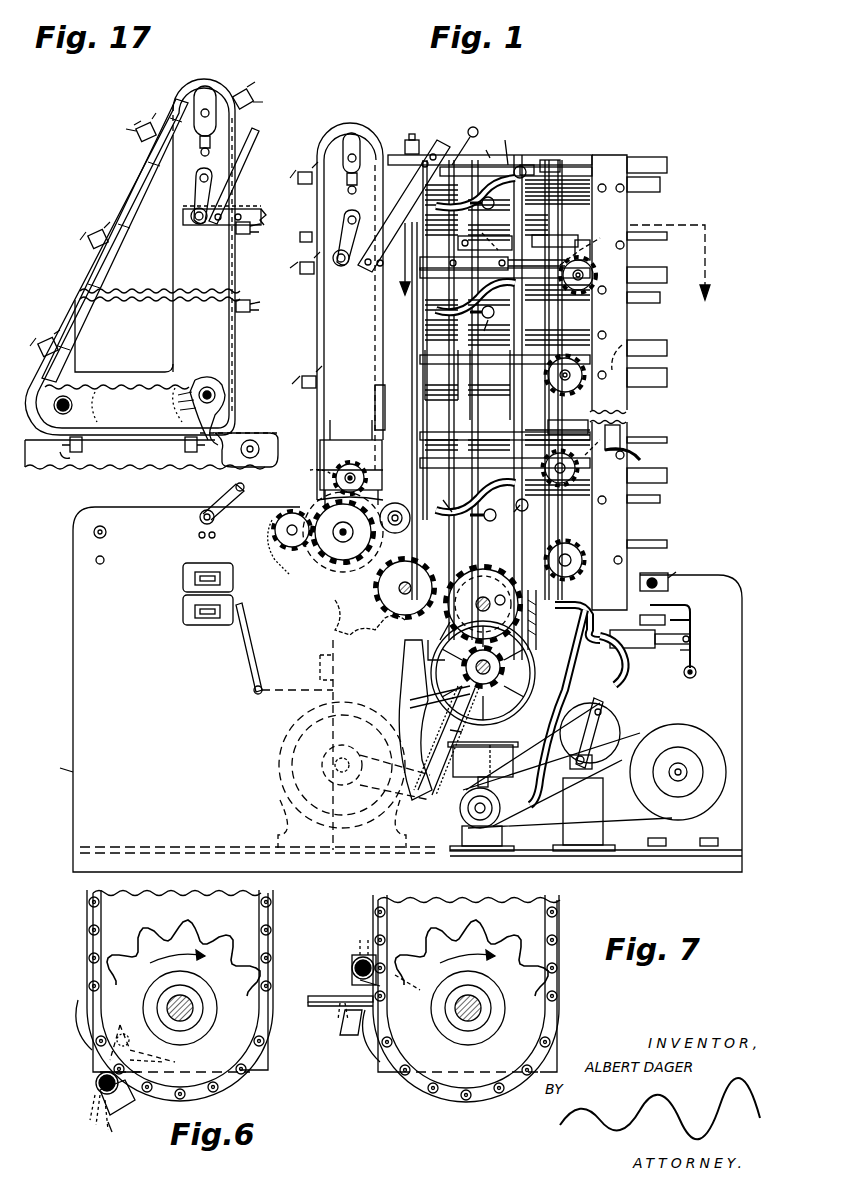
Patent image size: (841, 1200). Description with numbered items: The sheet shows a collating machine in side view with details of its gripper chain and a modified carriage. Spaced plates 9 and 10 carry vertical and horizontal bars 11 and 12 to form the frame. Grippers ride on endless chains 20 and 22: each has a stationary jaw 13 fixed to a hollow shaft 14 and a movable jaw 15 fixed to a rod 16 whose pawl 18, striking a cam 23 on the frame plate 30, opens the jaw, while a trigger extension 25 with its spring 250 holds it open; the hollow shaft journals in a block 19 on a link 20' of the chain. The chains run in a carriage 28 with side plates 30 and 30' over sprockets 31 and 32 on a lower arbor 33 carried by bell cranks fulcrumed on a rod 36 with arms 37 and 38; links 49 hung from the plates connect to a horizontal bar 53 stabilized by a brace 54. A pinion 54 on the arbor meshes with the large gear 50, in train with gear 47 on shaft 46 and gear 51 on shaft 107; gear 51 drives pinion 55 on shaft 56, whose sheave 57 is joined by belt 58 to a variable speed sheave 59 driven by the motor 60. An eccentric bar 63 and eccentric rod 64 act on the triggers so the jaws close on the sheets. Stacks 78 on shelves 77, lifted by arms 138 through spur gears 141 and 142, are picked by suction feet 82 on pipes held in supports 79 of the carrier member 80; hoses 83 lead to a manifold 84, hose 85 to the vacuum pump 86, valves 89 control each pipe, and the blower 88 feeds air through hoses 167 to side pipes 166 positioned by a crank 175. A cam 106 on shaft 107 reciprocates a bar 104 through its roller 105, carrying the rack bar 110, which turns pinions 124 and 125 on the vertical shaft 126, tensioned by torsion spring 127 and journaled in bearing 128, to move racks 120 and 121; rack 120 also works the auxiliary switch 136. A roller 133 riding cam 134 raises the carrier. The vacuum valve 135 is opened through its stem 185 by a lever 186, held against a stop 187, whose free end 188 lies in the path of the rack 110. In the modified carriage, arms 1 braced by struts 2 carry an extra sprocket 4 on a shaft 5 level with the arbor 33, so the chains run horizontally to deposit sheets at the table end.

In FIG. 17, the arm 1 is at (143, 380).
In FIG. 17, the reinforce brace 2 is at (135, 192).
In FIG. 17, the additional sprocket 4 is at (98, 408).
In FIG. 17, the shaft 5 is at (56, 406).
In FIG. 1, the side plate 9 is at (378, 501).
In FIG. 17, the side plate 10 is at (50, 470).
In FIG. 1, the side plate 10 is at (742, 716).
In FIG. 1, the vertical bar 11 is at (608, 158).
In FIG. 1, the horizontal bar 12 is at (667, 168).
In FIG. 17, the stationary jaw 13 is at (91, 240).
In FIG. 1, the stationary jaw 13 is at (305, 226).
In FIG. 6, the hollow shaft 14 is at (100, 1078).
In FIG. 7, the hollow shaft 14 is at (352, 963).
In FIG. 17, the movable jaw 15 is at (103, 230).
In FIG. 1, the movable jaw 15 is at (309, 212).
In FIG. 6, the movable jaw 15 is at (90, 1112).
In FIG. 6, the rod 16 is at (97, 1085).
In FIG. 7, the rod 16 is at (355, 973).
In FIG. 6, the pawl 18 is at (166, 1061).
In FIG. 7, the pawl 18 is at (352, 1028).
In FIG. 6, the block 19 is at (130, 1105).
In FIG. 7, the block 19 is at (384, 985).
In FIG. 1, the endless chain 20 is at (368, 397).
In FIG. 6, the endless chain 20 is at (167, 995).
In FIG. 7, the endless chain 20 is at (484, 998).
In FIG. 6, the link 20' is at (142, 1031).
In FIG. 7, the link 20' is at (422, 978).
In FIG. 17, the companion chain 22 is at (128, 446).
In FIG. 6, the cam 23 is at (80, 1003).
In FIG. 7, the cam 23 is at (378, 1045).
In FIG. 7, the extension 25 is at (318, 1003).
In FIG. 1, the carriage 28 is at (315, 306).
In FIG. 6, the frame plate 30 is at (196, 982).
In FIG. 7, the frame plate 30 is at (462, 997).
In FIG. 17, the side member 30' is at (160, 238).
In FIG. 1, the side member 30' is at (337, 407).
In FIG. 17, the sprocket 31 is at (175, 406).
In FIG. 6, the sprocket 31 is at (172, 925).
In FIG. 7, the sprocket 31 is at (518, 938).
In FIG. 1, the sprocket 32 is at (340, 445).
In FIG. 17, the lower arbor 33 is at (210, 394).
In FIG. 1, the lower arbor 33 is at (347, 470).
In FIG. 6, the lower arbor 33 is at (190, 1000).
In FIG. 7, the lower arbor 33 is at (478, 1000).
In FIG. 1, the rod 36 is at (338, 532).
In FIG. 17, the bell crank arm 37 is at (203, 392).
In FIG. 1, the bell crank arm 37 is at (332, 475).
In FIG. 17, the bell crank arm 38 is at (256, 433).
In FIG. 1, the bell crank arm 38 is at (394, 504).
In FIG. 1, the shaft 46 is at (399, 589).
In FIG. 1, the gear 47 is at (385, 622).
In FIG. 17, the link 49 is at (196, 198).
In FIG. 1, the link 49 is at (343, 238).
In FIG. 1, the large gear 50 is at (305, 560).
In FIG. 1, the gear 51 is at (450, 640).
In FIG. 17, the horizontal bar 53 is at (248, 213).
In FIG. 1, the horizontal bar 53 is at (442, 262).
In FIG. 1, the pinion 54 is at (440, 152).
In FIG. 1, the pinion 55 is at (420, 700).
In FIG. 1, the shaft 56 is at (494, 668).
In FIG. 1, the sheave 57 is at (500, 711).
In FIG. 1, the belt 58 is at (562, 690).
In FIG. 1, the variable speed sheave 59 is at (612, 736).
In FIG. 1, the electric motor 60 is at (684, 728).
In FIG. 1, the eccentric bar 63 is at (412, 140).
In FIG. 1, the eccentric rod 64 is at (412, 328).
In FIG. 1, the shelf 77 is at (440, 370).
In FIG. 1, the stack of sheets 78 is at (422, 338).
In FIG. 1, the adjustable support 79 is at (488, 210).
In FIG. 1, the carrier member 80 is at (470, 377).
In FIG. 1, the suction foot 82 is at (430, 200).
In FIG. 1, the flexible hose section 83 is at (450, 310).
In FIG. 1, the suction line manifold 84 is at (526, 165).
In FIG. 1, the flexible hose 85 is at (610, 662).
In FIG. 1, the vacuum pump 86 is at (495, 745).
In FIG. 1, the blower 88 is at (282, 738).
In FIG. 1, the valve 89 is at (518, 166).
In FIG. 1, the bar 104 is at (640, 620).
In FIG. 1, the roller 105 is at (504, 620).
In FIG. 1, the cam 106 is at (483, 612).
In FIG. 1, the shaft 107 is at (448, 624).
In FIG. 1, the rack bar 110 is at (652, 578).
In FIG. 1, the horizontal rack 120 is at (582, 460).
In FIG. 1, the horizontal rack 121 is at (590, 240).
In FIG. 1, the pinion 124 is at (562, 445).
In FIG. 1, the pinion 125 is at (560, 236).
In FIG. 1, the vertical shaft 126 is at (566, 175).
In FIG. 1, the torsion spring 127 is at (540, 647).
In FIG. 1, the upper bearing 128 is at (548, 160).
In FIG. 1, the roller 133 is at (500, 560).
In FIG. 1, the cam 134 is at (405, 641).
In FIG. 1, the vacuum valve 135 is at (645, 655).
In FIG. 1, the auxiliary switch 136 is at (622, 432).
In FIG. 1, the arm 138 is at (622, 345).
In FIG. 1, the spur gear 141 is at (592, 252).
In FIG. 1, the spur gear 142 is at (544, 370).
In FIG. 1, the vertical pipe 166 is at (470, 392).
In FIG. 1, the flexible hose section 167 is at (460, 670).
In FIG. 1, the crank 175 is at (475, 130).
In FIG. 1, the valve stem 185 is at (690, 650).
In FIG. 1, the lever 186 is at (696, 671).
In FIG. 1, the stop 187 is at (690, 620).
In FIG. 1, the free end 188 is at (672, 605).
In FIG. 7, the spring 250 is at (345, 1000).